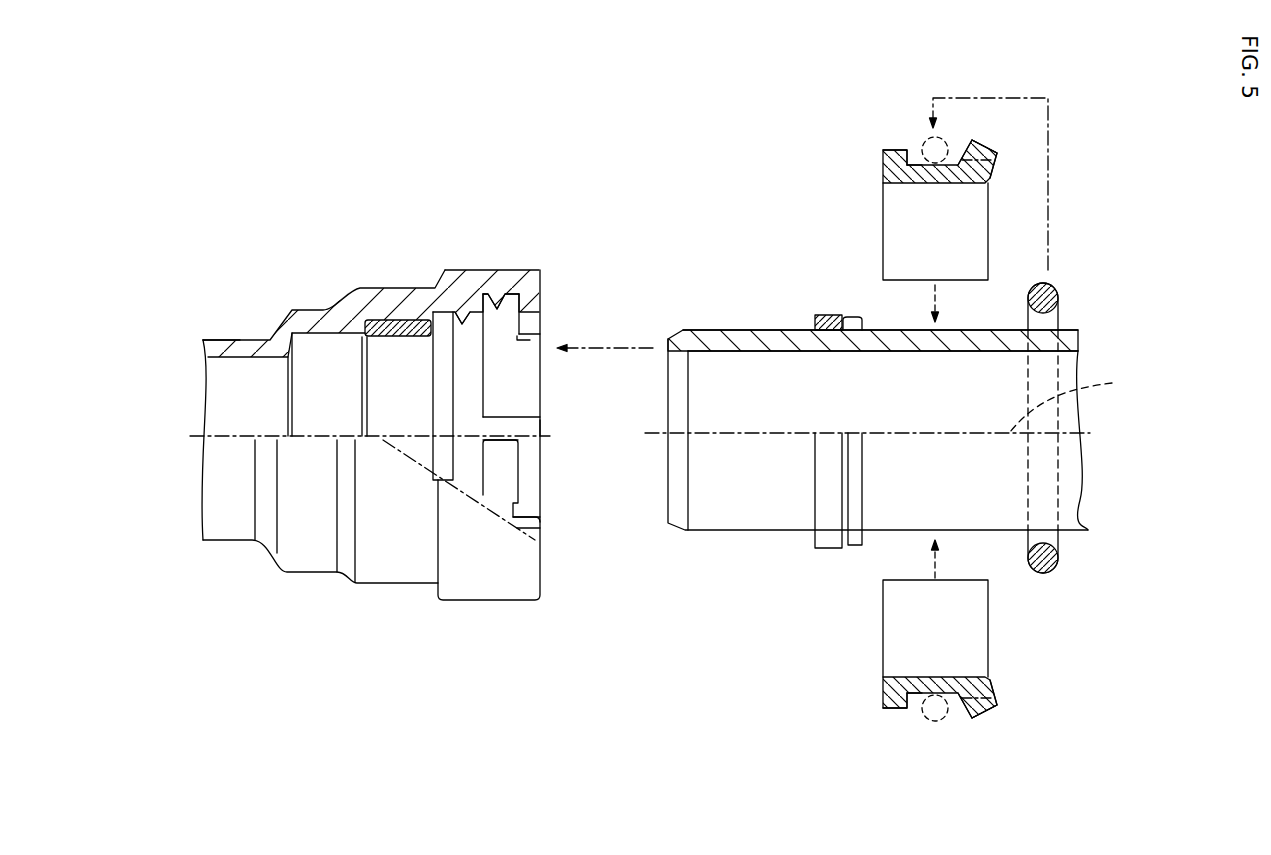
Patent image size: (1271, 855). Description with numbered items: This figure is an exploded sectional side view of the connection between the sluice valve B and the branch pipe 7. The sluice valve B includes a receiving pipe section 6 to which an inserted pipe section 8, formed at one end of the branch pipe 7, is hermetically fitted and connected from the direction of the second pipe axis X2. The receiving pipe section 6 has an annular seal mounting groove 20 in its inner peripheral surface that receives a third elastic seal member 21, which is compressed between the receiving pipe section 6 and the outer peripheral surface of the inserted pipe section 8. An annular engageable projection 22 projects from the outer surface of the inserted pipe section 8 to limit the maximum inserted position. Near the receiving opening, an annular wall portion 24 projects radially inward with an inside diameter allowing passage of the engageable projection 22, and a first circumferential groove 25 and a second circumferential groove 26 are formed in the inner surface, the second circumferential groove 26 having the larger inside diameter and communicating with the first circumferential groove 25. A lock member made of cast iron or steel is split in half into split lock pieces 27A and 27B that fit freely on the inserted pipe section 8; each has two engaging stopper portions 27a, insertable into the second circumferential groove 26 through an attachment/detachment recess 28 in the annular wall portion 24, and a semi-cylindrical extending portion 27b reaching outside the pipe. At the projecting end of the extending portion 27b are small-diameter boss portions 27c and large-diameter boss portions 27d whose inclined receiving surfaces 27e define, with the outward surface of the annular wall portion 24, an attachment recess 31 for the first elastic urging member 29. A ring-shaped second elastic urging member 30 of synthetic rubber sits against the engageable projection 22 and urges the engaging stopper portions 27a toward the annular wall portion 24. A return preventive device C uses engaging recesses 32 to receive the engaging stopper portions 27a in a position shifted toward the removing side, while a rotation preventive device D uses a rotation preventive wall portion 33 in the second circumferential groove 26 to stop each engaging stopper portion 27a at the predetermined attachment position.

The receiving pipe section 6 is at (362, 288).
The branch pipe 7 is at (1073, 327).
The inserted pipe section 8 is at (742, 330).
The seal mounting groove 20 is at (403, 338).
The third elastic seal member 21 is at (376, 338).
The engageable projection 22 is at (857, 316).
The annular wall portion 24 is at (539, 275).
The first circumferential groove 25 is at (457, 316).
The second circumferential groove 26 is at (494, 298).
The split lock piece 27A is at (881, 225).
The split lock piece 27B is at (881, 637).
The engaging stopper portion 27a is at (888, 152).
The extending portion 27b is at (960, 180).
The small-diameter boss portion 27c is at (993, 180).
The large-diameter boss portion 27d is at (998, 152).
The receiving surface 27e is at (963, 142).
The attachment/detachment recess 28 is at (530, 323).
The first elastic urging member 29 is at (947, 158).
The second elastic urging member 30 is at (825, 313).
The attachment recess 31 is at (915, 152).
The engaging recess 32 is at (515, 485).
The rotation preventive wall portion 33 is at (500, 427).
The sluice valve B is at (223, 338).
The return preventive device C is at (503, 471).
The rotation preventive device D is at (547, 427).
The second pipe axis X2 is at (1076, 401).